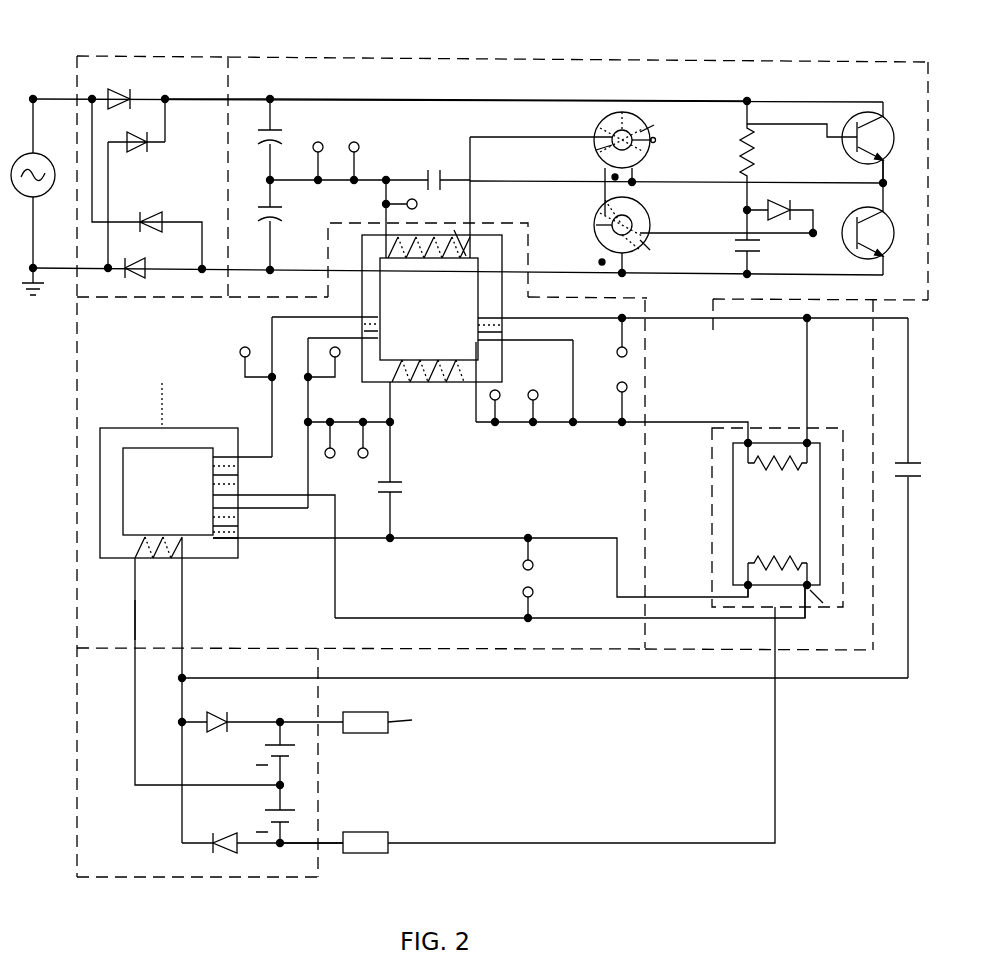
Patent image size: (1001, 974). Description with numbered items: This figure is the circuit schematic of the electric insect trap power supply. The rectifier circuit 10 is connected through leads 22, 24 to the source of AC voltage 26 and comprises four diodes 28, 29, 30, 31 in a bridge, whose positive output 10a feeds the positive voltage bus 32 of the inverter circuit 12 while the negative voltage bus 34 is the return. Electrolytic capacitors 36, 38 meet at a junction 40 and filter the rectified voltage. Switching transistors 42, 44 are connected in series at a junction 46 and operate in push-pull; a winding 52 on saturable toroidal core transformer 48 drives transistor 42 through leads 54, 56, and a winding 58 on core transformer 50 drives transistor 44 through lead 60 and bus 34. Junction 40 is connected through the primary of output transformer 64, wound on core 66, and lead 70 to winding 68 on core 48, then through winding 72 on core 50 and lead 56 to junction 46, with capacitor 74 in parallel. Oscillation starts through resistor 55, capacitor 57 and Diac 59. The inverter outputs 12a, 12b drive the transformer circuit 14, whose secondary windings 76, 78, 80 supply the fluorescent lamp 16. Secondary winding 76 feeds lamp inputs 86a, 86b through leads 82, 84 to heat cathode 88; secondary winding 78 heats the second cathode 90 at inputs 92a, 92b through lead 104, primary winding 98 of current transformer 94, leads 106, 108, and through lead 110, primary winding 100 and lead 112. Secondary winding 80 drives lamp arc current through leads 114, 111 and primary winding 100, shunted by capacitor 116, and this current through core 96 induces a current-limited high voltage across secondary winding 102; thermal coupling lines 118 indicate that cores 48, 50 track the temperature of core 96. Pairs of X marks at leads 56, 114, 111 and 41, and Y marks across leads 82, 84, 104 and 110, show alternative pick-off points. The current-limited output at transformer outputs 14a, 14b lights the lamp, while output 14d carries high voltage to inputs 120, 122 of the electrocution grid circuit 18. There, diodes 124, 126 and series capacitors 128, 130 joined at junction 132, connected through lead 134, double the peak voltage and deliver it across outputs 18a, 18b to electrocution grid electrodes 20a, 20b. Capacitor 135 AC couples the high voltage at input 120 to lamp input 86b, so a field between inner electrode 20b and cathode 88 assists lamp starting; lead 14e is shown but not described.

The rectifier circuit 10 is at (202, 190).
The output 10a is at (188, 97).
The inverter circuit 12 is at (469, 107).
The output 12a is at (354, 216).
The output 12b is at (473, 196).
The transformer circuit 14 is at (568, 516).
The output 14a is at (652, 420).
The output 14b is at (688, 621).
The output 14d is at (199, 614).
The control circuit conductor 14e is at (131, 595).
The fluorescent lamp 16 is at (785, 527).
The electrocution grid circuit 18 is at (129, 836).
The output 18a is at (326, 720).
The output 18b is at (327, 841).
The electrocution grid electrode 20a is at (424, 719).
The electrocution grid electrode 20b is at (712, 511).
The lead 22 is at (58, 270).
The lead 24 is at (65, 96).
The source of AC voltage 26 is at (12, 186).
The diode 28 is at (112, 86).
The diode 29 is at (151, 137).
The diode 30 is at (161, 218).
The diode 31 is at (136, 281).
The positive voltage bus 32 is at (350, 98).
The negative voltage bus 34 is at (641, 278).
The electrolytic capacitor 36 is at (274, 128).
The electrolytic capacitor 38 is at (268, 223).
The junction 40 is at (272, 181).
The lead 41 is at (344, 189).
The switching transistor 42 is at (884, 127).
The switching transistor 44 is at (886, 261).
The junction 46 is at (887, 181).
The saturable toroidal core transformer 48 is at (603, 128).
The saturable toroidal core transformer 50 is at (642, 212).
The winding 52 is at (657, 125).
The lead 54 is at (715, 128).
The resistor 55 is at (757, 151).
The lead 56 is at (627, 180).
The capacitor 57 is at (761, 251).
The winding 58 is at (642, 248).
The Diac 59 is at (798, 208).
The lead 60 is at (652, 232).
The output transformer 64 is at (473, 274).
The core 66 is at (502, 261).
The winding 68 is at (597, 152).
The lead 70 is at (519, 134).
The winding 72 is at (596, 226).
The capacitor 74 is at (427, 170).
The secondary winding 76 is at (507, 331).
The secondary winding 78 is at (380, 322).
The secondary winding 80 is at (418, 394).
The lead 82 is at (803, 370).
The lead 84 is at (598, 425).
The lamp input 86a is at (777, 410).
The lamp input 86b is at (809, 440).
The lamp cathode 88 is at (800, 469).
The second cathode 90 is at (771, 558).
The lamp input 92a is at (745, 583).
The lamp input 92b is at (812, 613).
The current transformer 94 is at (205, 483).
The core 96 is at (150, 426).
The primary winding 98 is at (242, 475).
The primary winding 100 is at (240, 518).
The secondary winding 102 is at (160, 562).
The lead 104 is at (270, 425).
The lead 106 is at (207, 272).
The lead 108 is at (419, 618).
The lead 110 is at (309, 420).
The lead 111 is at (388, 434).
The lead 112 is at (455, 537).
The lead 114 is at (512, 425).
The capacitor 116 is at (401, 485).
The thermal coupling lines 118 is at (581, 90).
The input 120 is at (185, 676).
The input 122 is at (135, 684).
The diode 124 is at (218, 711).
The diode 126 is at (238, 809).
The capacitor 128 is at (247, 752).
The capacitor 130 is at (290, 809).
The junction 132 is at (288, 782).
The lead 134 is at (135, 752).
The capacitor 135 is at (921, 479).